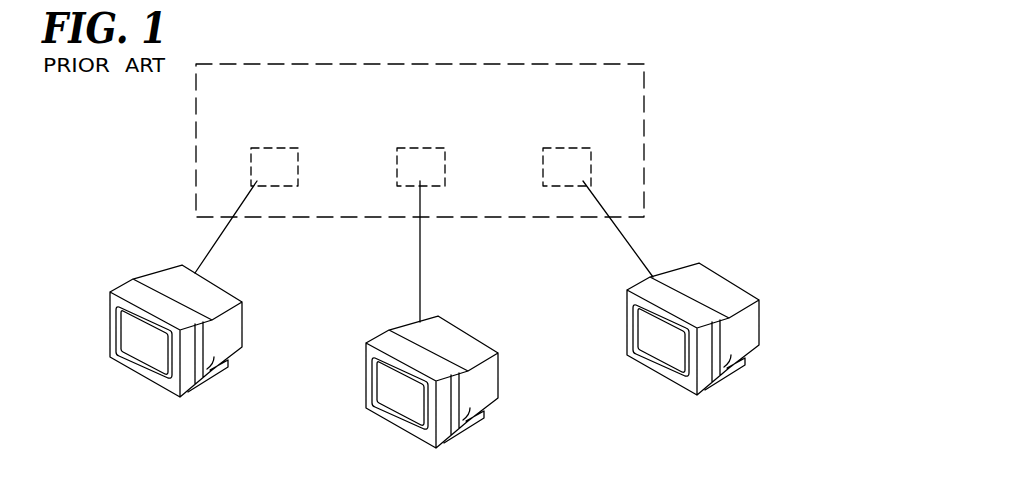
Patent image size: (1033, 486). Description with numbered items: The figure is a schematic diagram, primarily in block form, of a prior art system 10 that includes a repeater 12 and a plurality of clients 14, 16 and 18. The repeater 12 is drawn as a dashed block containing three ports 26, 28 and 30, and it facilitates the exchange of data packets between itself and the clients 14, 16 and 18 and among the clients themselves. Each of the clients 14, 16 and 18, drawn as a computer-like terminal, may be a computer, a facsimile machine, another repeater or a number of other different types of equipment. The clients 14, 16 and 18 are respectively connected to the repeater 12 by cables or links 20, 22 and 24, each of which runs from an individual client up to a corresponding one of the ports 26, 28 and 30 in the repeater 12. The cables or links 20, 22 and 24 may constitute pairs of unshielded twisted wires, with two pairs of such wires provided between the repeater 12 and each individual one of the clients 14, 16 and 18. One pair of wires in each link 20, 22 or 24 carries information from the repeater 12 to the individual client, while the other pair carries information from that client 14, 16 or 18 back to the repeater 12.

The system 10 is at (700, 112).
The repeater 12 is at (520, 64).
The client 14 is at (232, 335).
The client 16 is at (488, 386).
The client 18 is at (749, 333).
The link 20 is at (218, 240).
The link 22 is at (420, 287).
The link 24 is at (625, 237).
The port 26 is at (298, 166).
The port 28 is at (445, 164).
The port 30 is at (590, 164).